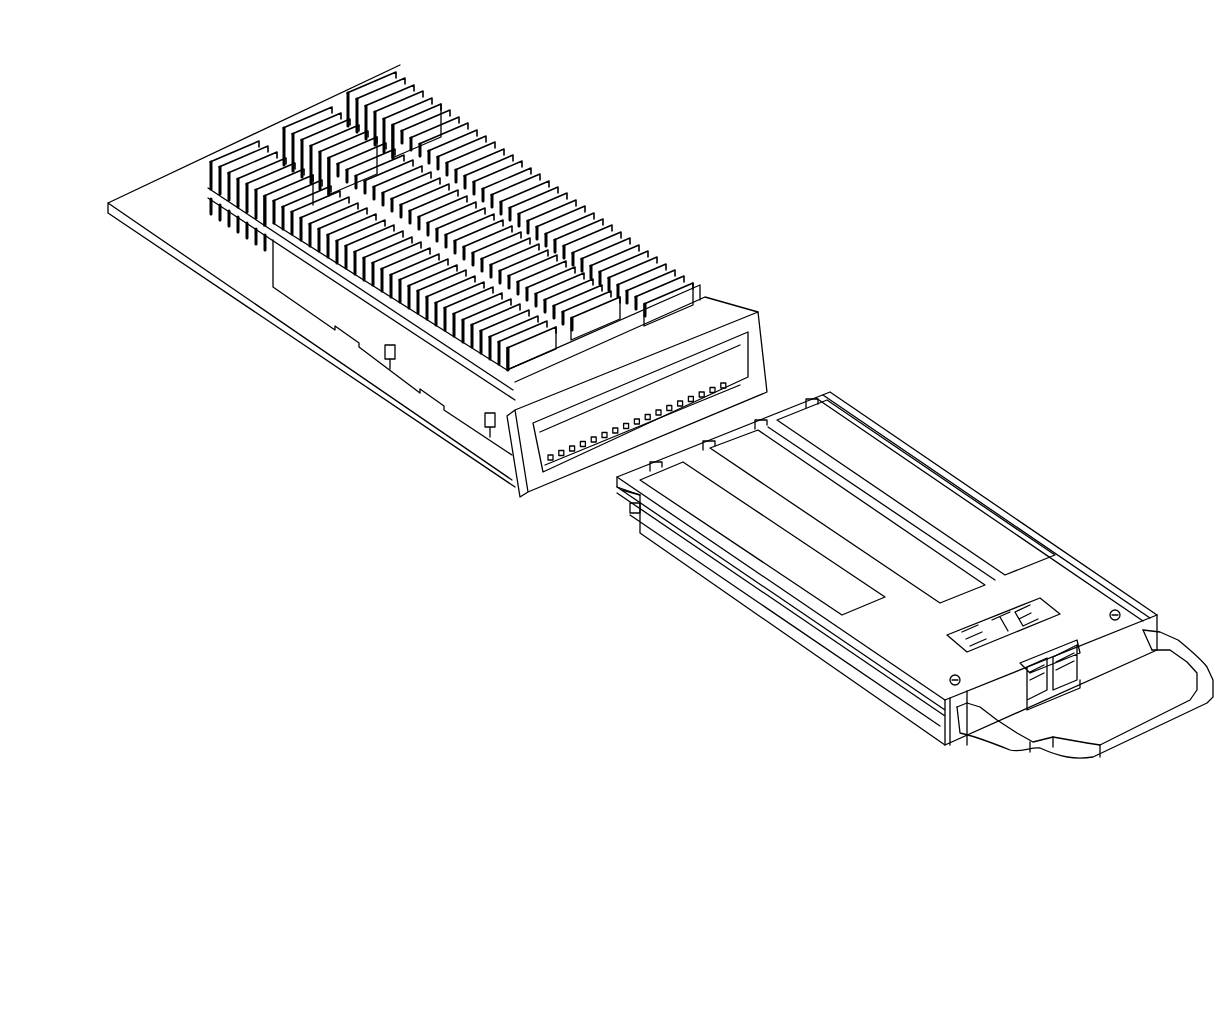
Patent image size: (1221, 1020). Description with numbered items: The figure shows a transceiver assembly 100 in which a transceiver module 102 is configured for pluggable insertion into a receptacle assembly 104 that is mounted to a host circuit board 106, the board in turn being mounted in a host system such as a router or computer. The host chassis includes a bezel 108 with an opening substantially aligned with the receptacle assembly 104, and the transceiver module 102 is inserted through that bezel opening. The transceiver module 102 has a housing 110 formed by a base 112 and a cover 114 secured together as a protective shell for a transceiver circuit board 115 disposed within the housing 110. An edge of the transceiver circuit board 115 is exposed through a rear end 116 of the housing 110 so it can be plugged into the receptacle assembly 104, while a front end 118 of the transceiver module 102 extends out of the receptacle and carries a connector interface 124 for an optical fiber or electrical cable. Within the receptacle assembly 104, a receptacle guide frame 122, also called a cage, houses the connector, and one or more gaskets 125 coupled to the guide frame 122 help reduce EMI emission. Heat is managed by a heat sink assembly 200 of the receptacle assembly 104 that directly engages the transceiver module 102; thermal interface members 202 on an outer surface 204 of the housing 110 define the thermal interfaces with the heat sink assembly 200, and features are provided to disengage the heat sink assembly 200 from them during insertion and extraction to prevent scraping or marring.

The transceiver assembly 100 is at (910, 168).
The transceiver module 102 is at (1010, 428).
The receptacle assembly 104 is at (670, 140).
The host circuit board 106 is at (385, 378).
The bezel 108 is at (515, 480).
The housing 110 is at (1033, 556).
The base 112 is at (745, 597).
The cover 114 is at (782, 597).
The transceiver circuit board 115 is at (632, 510).
The rear end 116 is at (608, 513).
The front end 118 is at (1032, 768).
The receptacle guide frame 122 is at (337, 308).
The connector interface 124 is at (1062, 700).
The gasket 125 is at (768, 357).
The heat sink assembly 200 is at (550, 160).
The thermal interface members 202 is at (829, 500).
The outer surface 204 is at (922, 525).